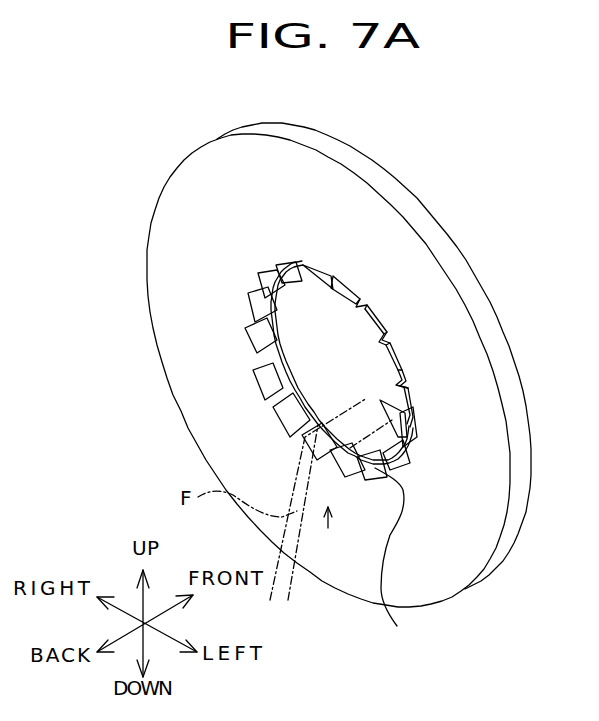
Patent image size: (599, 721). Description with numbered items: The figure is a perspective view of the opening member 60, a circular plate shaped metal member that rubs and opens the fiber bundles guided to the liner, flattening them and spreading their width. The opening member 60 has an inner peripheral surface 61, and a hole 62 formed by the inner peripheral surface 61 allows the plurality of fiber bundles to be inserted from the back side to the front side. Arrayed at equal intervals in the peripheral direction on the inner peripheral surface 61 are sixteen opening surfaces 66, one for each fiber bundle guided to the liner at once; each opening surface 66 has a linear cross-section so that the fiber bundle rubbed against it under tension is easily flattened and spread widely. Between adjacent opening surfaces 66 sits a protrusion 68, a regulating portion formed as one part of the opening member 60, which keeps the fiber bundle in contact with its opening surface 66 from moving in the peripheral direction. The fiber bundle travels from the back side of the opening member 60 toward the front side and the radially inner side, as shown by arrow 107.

The opening member 60 is at (165, 137).
The inner peripheral surface 61 is at (315, 397).
The hole 62 is at (352, 338).
The opening surface 66 is at (404, 412).
The protrusion 68 is at (394, 558).
The arrow 107 is at (328, 528).